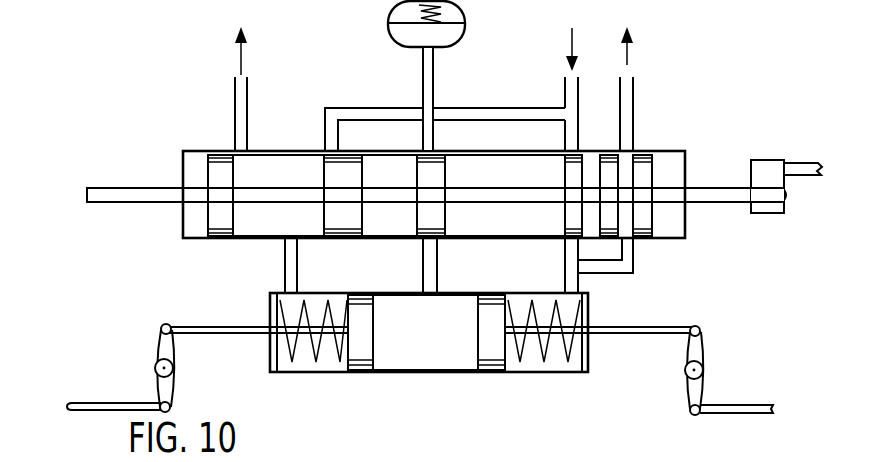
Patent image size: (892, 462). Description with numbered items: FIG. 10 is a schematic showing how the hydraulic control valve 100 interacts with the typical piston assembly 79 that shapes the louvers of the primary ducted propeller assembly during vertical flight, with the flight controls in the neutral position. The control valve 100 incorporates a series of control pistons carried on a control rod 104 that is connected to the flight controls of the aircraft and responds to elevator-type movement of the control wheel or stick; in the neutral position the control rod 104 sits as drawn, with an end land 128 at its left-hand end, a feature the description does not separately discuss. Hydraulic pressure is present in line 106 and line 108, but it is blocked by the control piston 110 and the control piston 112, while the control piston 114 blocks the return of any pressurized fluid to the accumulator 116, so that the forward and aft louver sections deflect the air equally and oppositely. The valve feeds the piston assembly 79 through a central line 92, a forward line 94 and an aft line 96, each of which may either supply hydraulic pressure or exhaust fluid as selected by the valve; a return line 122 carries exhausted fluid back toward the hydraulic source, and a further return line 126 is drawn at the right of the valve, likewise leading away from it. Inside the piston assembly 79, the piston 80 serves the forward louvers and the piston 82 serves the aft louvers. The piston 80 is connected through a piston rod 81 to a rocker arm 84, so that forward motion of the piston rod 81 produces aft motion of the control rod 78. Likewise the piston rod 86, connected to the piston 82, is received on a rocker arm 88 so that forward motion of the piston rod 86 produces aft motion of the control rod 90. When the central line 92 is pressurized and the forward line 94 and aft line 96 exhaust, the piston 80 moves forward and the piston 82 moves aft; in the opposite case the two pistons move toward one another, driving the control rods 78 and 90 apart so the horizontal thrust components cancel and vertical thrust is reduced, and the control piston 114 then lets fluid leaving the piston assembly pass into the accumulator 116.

The control rod 78 is at (120, 400).
The piston assembly 79 is at (434, 378).
The piston 80 is at (362, 356).
The piston rod 81 is at (228, 325).
The piston 82 is at (490, 358).
The rocker arm 84 is at (163, 348).
The piston rod 86 is at (648, 328).
The rocker arm 88 is at (705, 353).
The control rod 90 is at (737, 405).
The central line 92 is at (423, 258).
The forward line 94 is at (285, 255).
The aft line 96 is at (565, 260).
The control valve 100 is at (680, 143).
The control rod 104 is at (724, 200).
The line 106 is at (328, 125).
The line 108 is at (605, 113).
The control piston 110 is at (330, 171).
The control piston 112 is at (570, 182).
The control piston 114 is at (424, 172).
The accumulator 116 is at (463, 30).
The outline 122 is at (240, 105).
The return line 126 is at (621, 148).
The spool land 128 is at (214, 215).